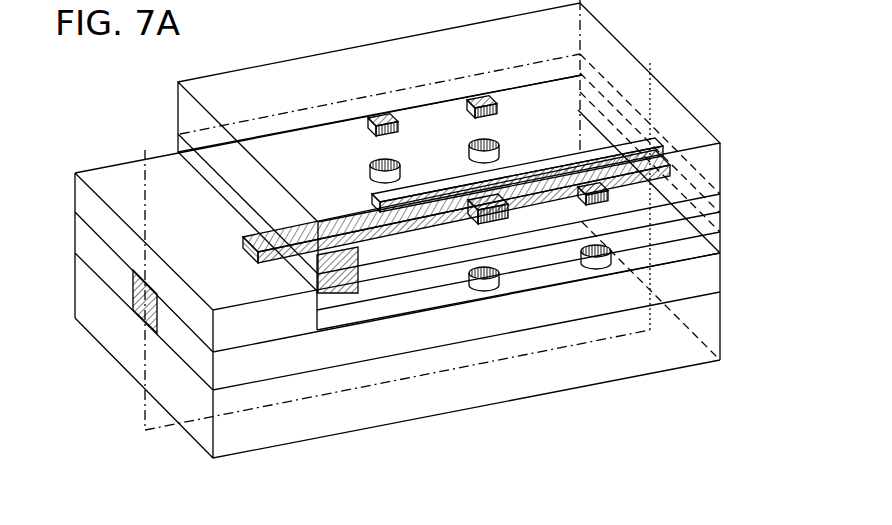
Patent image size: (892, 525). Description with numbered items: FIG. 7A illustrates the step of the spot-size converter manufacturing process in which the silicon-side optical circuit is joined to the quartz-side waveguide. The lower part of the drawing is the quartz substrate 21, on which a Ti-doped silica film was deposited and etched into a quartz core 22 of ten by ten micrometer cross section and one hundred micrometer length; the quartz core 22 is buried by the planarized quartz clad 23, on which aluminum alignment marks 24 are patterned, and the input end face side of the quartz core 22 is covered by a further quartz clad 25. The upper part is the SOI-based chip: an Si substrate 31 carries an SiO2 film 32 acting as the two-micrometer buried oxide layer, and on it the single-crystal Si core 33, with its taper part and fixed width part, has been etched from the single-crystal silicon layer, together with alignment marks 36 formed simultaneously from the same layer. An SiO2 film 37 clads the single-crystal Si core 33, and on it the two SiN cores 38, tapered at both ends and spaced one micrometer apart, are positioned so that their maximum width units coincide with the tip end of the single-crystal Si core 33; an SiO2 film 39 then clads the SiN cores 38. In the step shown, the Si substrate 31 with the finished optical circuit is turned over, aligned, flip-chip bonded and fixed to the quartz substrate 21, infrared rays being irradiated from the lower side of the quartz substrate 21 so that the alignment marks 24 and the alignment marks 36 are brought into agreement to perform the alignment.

The quartz substrate 21 is at (88, 290).
The quartz core 22 is at (134, 314).
The quartz clad 23 is at (88, 237).
The alignment marks 24 is at (596, 266).
The quartz clad 25 is at (88, 200).
The Si substrate 31 is at (710, 160).
The SiO2 film 32 is at (722, 195).
The single-crystal Si core 33 is at (645, 140).
The alignment marks 36 is at (383, 112).
The SiO2 film 37 is at (722, 218).
The SiN cores 38 is at (290, 230).
The SiO2 film 39 is at (722, 242).